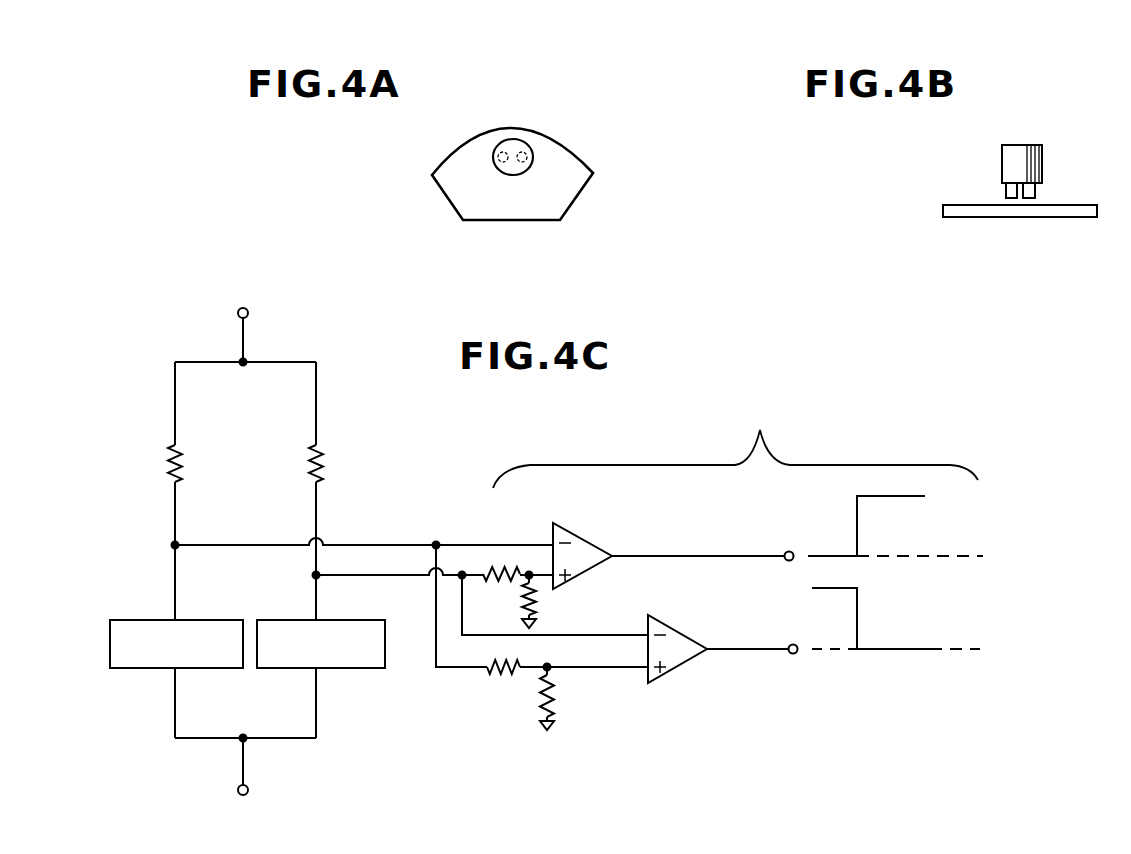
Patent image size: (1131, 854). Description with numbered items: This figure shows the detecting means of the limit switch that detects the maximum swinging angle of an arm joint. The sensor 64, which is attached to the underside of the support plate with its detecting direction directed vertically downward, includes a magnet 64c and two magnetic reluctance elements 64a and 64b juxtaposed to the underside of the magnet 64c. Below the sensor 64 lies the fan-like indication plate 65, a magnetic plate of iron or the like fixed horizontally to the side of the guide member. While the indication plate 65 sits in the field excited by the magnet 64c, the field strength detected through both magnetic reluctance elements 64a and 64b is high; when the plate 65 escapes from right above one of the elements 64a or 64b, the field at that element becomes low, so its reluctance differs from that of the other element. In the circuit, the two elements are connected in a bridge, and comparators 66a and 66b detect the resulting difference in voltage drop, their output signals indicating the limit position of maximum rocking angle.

In FIG. 4A, the sensor 64 is at (515, 152).
In FIG. 4B, the sensor 64 is at (1043, 148).
In FIG. 4A, the magnetic reluctance element 64a is at (498, 150).
In FIG. 4B, the magnetic reluctance element 64a is at (1003, 193).
In FIG. 4C, the magnetic reluctance element 64a is at (110, 645).
In FIG. 4A, the magnetic reluctance element 64b is at (530, 155).
In FIG. 4B, the magnetic reluctance element 64b is at (1040, 193).
In FIG. 4C, the magnetic reluctance element 64b is at (372, 670).
In FIG. 4B, the magnet 64c is at (1017, 150).
In FIG. 4A, the indication plate 65 is at (573, 203).
In FIG. 4B, the indication plate 65 is at (1050, 218).
In FIG. 4C, the comparator 66a is at (593, 543).
In FIG. 4C, the comparator 66b is at (687, 658).